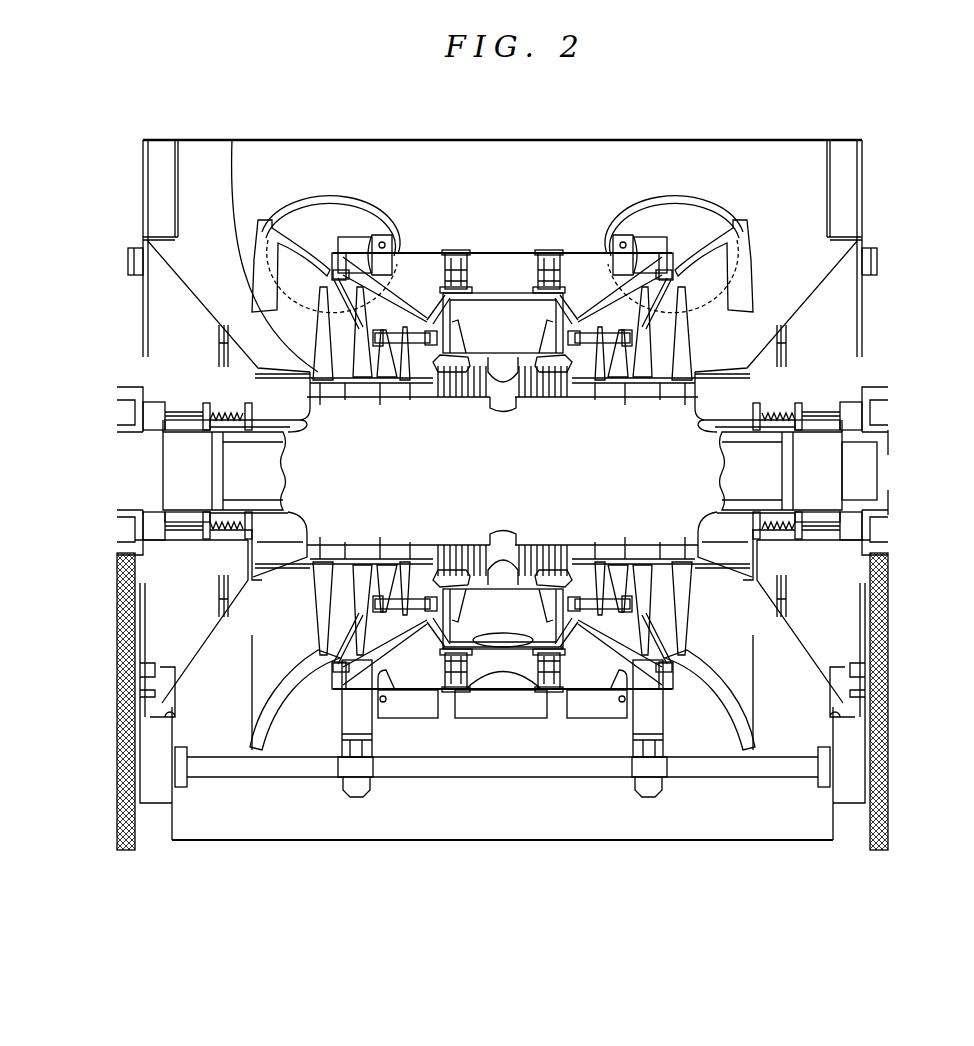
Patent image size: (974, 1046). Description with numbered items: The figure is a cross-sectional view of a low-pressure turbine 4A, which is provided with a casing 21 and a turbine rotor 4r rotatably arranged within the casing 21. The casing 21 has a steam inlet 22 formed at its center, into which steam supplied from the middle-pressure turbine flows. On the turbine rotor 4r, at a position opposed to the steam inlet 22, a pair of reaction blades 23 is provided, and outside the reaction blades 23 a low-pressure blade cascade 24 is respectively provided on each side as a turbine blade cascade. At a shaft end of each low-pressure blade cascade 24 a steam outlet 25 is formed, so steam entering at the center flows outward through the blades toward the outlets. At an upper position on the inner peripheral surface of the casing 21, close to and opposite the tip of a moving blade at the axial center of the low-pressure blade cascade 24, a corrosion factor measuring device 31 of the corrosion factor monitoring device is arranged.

The low-pressure turbine 4A is at (795, 128).
The turbine rotor 4r is at (860, 469).
The casing 21 is at (294, 160).
The steam inlet 22 is at (507, 373).
The reaction blades 23 is at (483, 373).
The low-pressure blade cascade 24 is at (311, 349).
The steam outlet 25 is at (580, 720).
The corrosion factor measuring device 31 is at (600, 333).